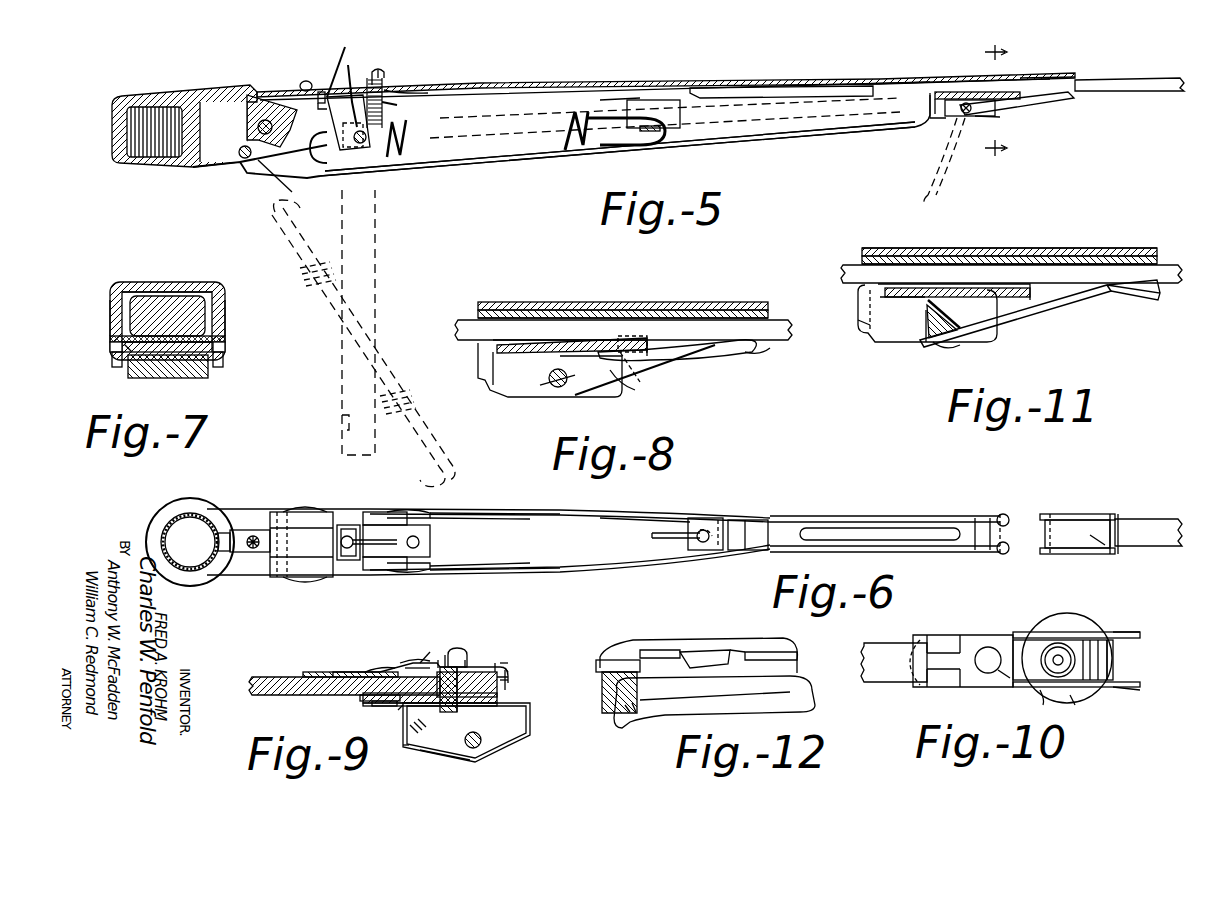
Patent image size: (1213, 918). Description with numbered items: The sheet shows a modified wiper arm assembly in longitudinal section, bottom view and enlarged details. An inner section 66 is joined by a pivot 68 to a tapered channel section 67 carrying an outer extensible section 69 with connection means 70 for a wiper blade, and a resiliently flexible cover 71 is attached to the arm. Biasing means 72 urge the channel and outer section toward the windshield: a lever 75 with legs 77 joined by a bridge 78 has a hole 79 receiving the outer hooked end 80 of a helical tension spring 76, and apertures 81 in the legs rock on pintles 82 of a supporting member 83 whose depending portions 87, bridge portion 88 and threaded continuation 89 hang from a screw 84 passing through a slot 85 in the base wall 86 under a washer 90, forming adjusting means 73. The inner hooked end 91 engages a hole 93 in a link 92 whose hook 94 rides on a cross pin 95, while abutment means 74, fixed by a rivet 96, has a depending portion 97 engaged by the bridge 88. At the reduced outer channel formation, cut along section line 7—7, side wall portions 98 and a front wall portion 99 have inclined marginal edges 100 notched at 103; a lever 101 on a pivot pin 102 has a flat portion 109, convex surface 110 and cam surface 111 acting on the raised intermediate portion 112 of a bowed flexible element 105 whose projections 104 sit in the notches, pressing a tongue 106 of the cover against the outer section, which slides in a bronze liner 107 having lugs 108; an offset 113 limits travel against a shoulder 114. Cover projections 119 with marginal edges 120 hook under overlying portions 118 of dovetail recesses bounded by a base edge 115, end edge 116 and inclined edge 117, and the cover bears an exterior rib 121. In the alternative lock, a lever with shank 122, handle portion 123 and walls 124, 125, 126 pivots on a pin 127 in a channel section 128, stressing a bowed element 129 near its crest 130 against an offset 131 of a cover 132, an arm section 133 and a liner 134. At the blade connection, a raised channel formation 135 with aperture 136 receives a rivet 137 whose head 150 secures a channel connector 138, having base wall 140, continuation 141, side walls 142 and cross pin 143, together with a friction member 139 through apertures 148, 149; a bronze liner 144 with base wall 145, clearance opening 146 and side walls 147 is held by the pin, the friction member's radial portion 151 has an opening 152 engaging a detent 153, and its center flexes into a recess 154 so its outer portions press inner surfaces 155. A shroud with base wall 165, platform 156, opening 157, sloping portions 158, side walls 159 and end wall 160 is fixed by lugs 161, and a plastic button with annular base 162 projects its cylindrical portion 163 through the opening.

In FIG. 5, the inner section 66 is at (185, 82).
In FIG. 6, the inner section 66 is at (178, 500).
In FIG. 5, the intermediate tapered channel section 67 is at (562, 83).
In FIG. 6, the intermediate tapered channel section 67 is at (510, 509).
In FIG. 5, the pivot 68 is at (247, 127).
In FIG. 6, the pivot 68 is at (300, 586).
In FIG. 5, the outer extensible section 69 is at (1138, 78).
In FIG. 8, the outer extensible section 69 is at (782, 318).
In FIG. 11, the outer extensible section 69 is at (1011, 274).
In FIG. 6, the outer extensible section 69 is at (1168, 519).
In FIG. 9, the outer extensible section 69 is at (275, 677).
In FIG. 10, the outer extensible section 69 is at (894, 662).
In FIG. 9, the connection means 70 is at (483, 614).
In FIG. 5, the elongate resiliently flexible cover 71 is at (790, 136).
In FIG. 5, the biasing means 72 is at (534, 100).
In FIG. 5, the adjusting means 73 is at (386, 60).
In FIG. 5, the abutment means 74 is at (322, 91).
In FIG. 5, the elongate lever 75 is at (622, 98).
In FIG. 6, the elongate lever 75 is at (606, 518).
In FIG. 5, the helical tension spring 76 is at (576, 110).
In FIG. 6, the helical tension spring 76 is at (662, 532).
In FIG. 6, the legs 77 is at (500, 514).
In FIG. 5, the bridge 78 is at (682, 118).
In FIG. 6, the bridge 78 is at (700, 518).
In FIG. 5, the hole 79 is at (665, 138).
In FIG. 6, the hole 79 is at (712, 530).
In FIG. 5, the outer hooked end 80 is at (657, 113).
In FIG. 6, the outer hooked end 80 is at (695, 540).
In FIG. 5, the apertures 81 is at (368, 137).
In FIG. 5, the pintles 82 is at (385, 178).
In FIG. 6, the pintles 82 is at (410, 512).
In FIG. 5, the supporting member 83 is at (334, 65).
In FIG. 5, the screw 84 is at (386, 70).
In FIG. 6, the screw 84 is at (422, 547).
In FIG. 5, the slot 85 is at (415, 92).
In FIG. 5, the base wall 86 is at (518, 83).
In FIG. 6, the base wall 86 is at (556, 510).
In FIG. 5, the depending portions 87 is at (340, 116).
In FIG. 6, the depending portions 87 is at (378, 512).
In FIG. 5, the bridge portion 88 is at (359, 89).
In FIG. 5, the continuation 89 is at (404, 107).
In FIG. 6, the continuation 89 is at (420, 535).
In FIG. 5, the washer 90 is at (386, 76).
In FIG. 5, the inner hooked end 91 is at (260, 155).
In FIG. 5, the link 92 is at (262, 180).
In FIG. 6, the link 92 is at (312, 540).
In FIG. 6, the hole 93 is at (350, 535).
In FIG. 5, the arcuate loop or hook 94 is at (239, 151).
In FIG. 6, the arcuate loop or hook 94 is at (264, 530).
In FIG. 5, the cross pin 95 is at (240, 163).
In FIG. 6, the cross pin 95 is at (293, 522).
In FIG. 5, the rivet 96 is at (303, 81).
In FIG. 5, the depending portion 97 is at (312, 105).
In FIG. 5, the side wall portions 98 is at (945, 112).
In FIG. 7, the side wall portions 98 is at (111, 300).
In FIG. 8, the side wall portions 98 is at (528, 397).
In FIG. 6, the side wall portions 98 is at (904, 514).
In FIG. 5, the base or front wall portion 99 is at (1052, 76).
In FIG. 7, the base or front wall portion 99 is at (171, 282).
In FIG. 8, the base or front wall portion 99 is at (710, 302).
In FIG. 8, the marginal edges 100 is at (765, 347).
In FIG. 6, the marginal edges 100 is at (1095, 514).
In FIG. 5, the lever 101 is at (1010, 104).
In FIG. 7, the lever 101 is at (208, 376).
In FIG. 8, the lever 101 is at (700, 350).
In FIG. 6, the lever 101 is at (1118, 545).
In FIG. 5, the pivot pin 102 is at (970, 113).
In FIG. 8, the pivot pin 102 is at (568, 385).
In FIG. 5, the notches 103 is at (996, 118).
In FIG. 7, the notches 103 is at (115, 369).
In FIG. 8, the notches 103 is at (637, 391).
In FIG. 7, the lateral projections 104 is at (110, 348).
In FIG. 8, the lateral projections 104 is at (642, 380).
In FIG. 5, the resiliently flexible element 105 is at (945, 130).
In FIG. 7, the resiliently flexible element 105 is at (124, 355).
In FIG. 8, the resiliently flexible element 105 is at (655, 380).
In FIG. 5, the tongue 106 is at (950, 90).
In FIG. 7, the tongue 106 is at (130, 314).
In FIG. 8, the tongue 106 is at (506, 343).
In FIG. 5, the liner 107 is at (862, 90).
In FIG. 7, the liner 107 is at (186, 292).
In FIG. 8, the liner 107 is at (660, 320).
In FIG. 7, the lateral lugs 108 is at (110, 338).
In FIG. 8, the flat portion 109 is at (573, 350).
In FIG. 8, the convex surface 110 is at (540, 397).
In FIG. 8, the convex cam surface 111 is at (545, 358).
In FIG. 8, the raised intermediate portion 112 is at (556, 345).
In FIG. 5, the offset 113 is at (702, 96).
In FIG. 6, the offset 113 is at (745, 520).
In FIG. 5, the shoulder 114 is at (928, 99).
In FIG. 12, the base edge 115 is at (705, 650).
In FIG. 12, the end edge 116 is at (745, 655).
In FIG. 12, the inclined edge 117 is at (635, 655).
In FIG. 12, the overlying portion 118 is at (666, 652).
In FIG. 12, the lateral projections 119 is at (730, 655).
In FIG. 12, the transverse marginal edges 120 is at (603, 690).
In FIG. 5, the rib 121 is at (500, 165).
In FIG. 6, the rib 121 is at (862, 518).
In FIG. 12, the rib 121 is at (795, 699).
In FIG. 11, the shank 122 is at (1022, 318).
In FIG. 11, the handle portion 123 is at (1158, 301).
In FIG. 11, the wall 124 is at (935, 338).
In FIG. 11, the wall 125 is at (924, 340).
In FIG. 11, the wall 126 is at (945, 305).
In FIG. 11, the pivot pin 127 is at (950, 347).
In FIG. 11, the channel arm section 128 is at (986, 248).
In FIG. 11, the resiliently flexible element 129 is at (860, 301).
In FIG. 11, the crest 130 is at (928, 300).
In FIG. 11, the tongue or offset 131 is at (944, 286).
In FIG. 11, the cover 132 is at (868, 331).
In FIG. 11, the extensible retractible arm section 133 is at (1067, 268).
In FIG. 11, the liner 134 is at (922, 248).
In FIG. 9, the channel formation 135 is at (422, 660).
In FIG. 9, the aperture 136 is at (427, 652).
In FIG. 9, the rivet 137 is at (415, 665).
In FIG. 10, the rivet 137 is at (1064, 650).
In FIG. 9, the channel connector member 138 is at (530, 730).
In FIG. 10, the channel connector member 138 is at (1057, 643).
In FIG. 9, the friction member 139 is at (497, 698).
In FIG. 10, the friction member 139 is at (1065, 698).
In FIG. 9, the base wall 140 is at (497, 705).
In FIG. 9, the continuation 141 is at (400, 712).
In FIG. 10, the continuation 141 is at (998, 676).
In FIG. 10, the side walls 142 is at (1130, 634).
In FIG. 9, the cross pin 143 is at (473, 748).
In FIG. 10, the cross pin 143 is at (1105, 688).
In FIG. 10, the liner 144 is at (1113, 654).
In FIG. 9, the base wall 145 is at (403, 742).
In FIG. 10, the base wall 145 is at (1042, 692).
In FIG. 9, the clearance opening 146 is at (425, 728).
In FIG. 10, the clearance opening 146 is at (1050, 658).
In FIG. 9, the side walls 147 is at (430, 745).
In FIG. 10, the side walls 147 is at (1030, 640).
In FIG. 9, the aperture 148 is at (445, 712).
In FIG. 9, the aperture 149 is at (460, 706).
In FIG. 9, the head 150 is at (446, 655).
In FIG. 9, the radial portion 151 is at (352, 703).
In FIG. 10, the radial portion 151 is at (1002, 685).
In FIG. 9, the opening 152 is at (375, 672).
In FIG. 9, the detent 153 is at (378, 707).
In FIG. 9, the recess 154 is at (495, 672).
In FIG. 9, the inner spaced surfaces 155 is at (385, 668).
In FIG. 9, the platform 156 is at (470, 660).
In FIG. 9, the opening 157 is at (440, 668).
In FIG. 9, the sloping portions 158 is at (438, 660).
In FIG. 9, the side walls 159 is at (505, 677).
In FIG. 9, the end wall 160 is at (510, 674).
In FIG. 10, the end wall 160 is at (1113, 672).
In FIG. 9, the lugs 161 is at (325, 698).
In FIG. 10, the lugs 161 is at (940, 640).
In FIG. 9, the annular base 162 is at (518, 618).
In FIG. 9, the axial cylindrical portion 163 is at (463, 650).
In FIG. 9, the base wall 165 is at (505, 663).
In FIG. 5, the section line 7 is at (996, 102).